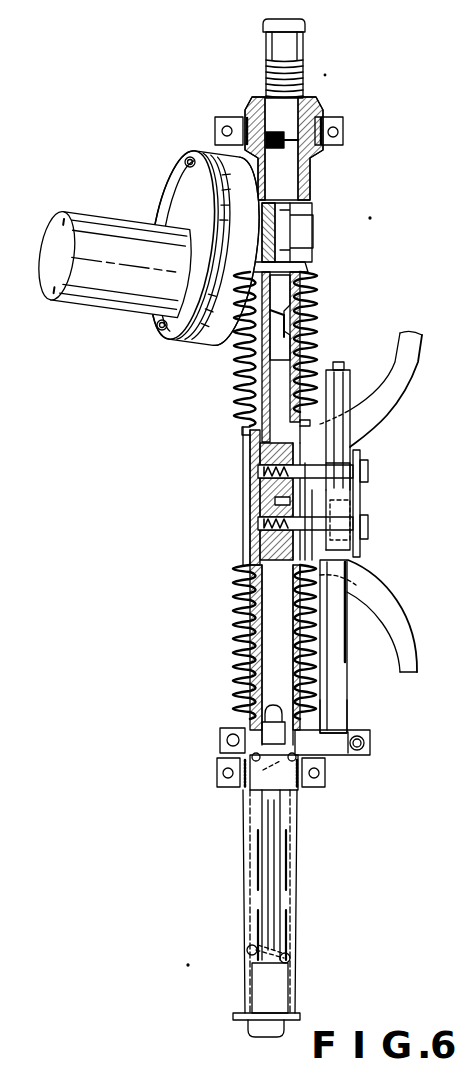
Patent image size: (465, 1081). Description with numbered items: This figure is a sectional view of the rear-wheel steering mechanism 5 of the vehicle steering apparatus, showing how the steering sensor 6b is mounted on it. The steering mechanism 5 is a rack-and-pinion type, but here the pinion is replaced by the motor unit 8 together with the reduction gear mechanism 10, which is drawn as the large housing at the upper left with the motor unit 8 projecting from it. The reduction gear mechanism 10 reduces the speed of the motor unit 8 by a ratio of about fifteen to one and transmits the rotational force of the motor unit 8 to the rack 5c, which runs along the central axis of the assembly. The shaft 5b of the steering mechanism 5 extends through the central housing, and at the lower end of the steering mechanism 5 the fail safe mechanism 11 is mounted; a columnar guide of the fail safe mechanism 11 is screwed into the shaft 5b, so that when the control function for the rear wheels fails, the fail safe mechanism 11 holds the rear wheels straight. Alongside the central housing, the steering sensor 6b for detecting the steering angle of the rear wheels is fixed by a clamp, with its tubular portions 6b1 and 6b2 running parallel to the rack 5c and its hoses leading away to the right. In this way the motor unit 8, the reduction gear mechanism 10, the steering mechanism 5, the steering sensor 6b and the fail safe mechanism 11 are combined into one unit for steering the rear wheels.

The steering mechanism 5 is at (243, 547).
The shaft 5b is at (272, 440).
The rack 5c is at (240, 363).
The steering sensor 6b is at (383, 692).
The tube wall line 6b1 is at (340, 658).
The tube lower end 6b2 is at (342, 724).
The motor unit 8 is at (114, 304).
The reduction gear mechanism 10 is at (203, 342).
The fail safe mechanism 11 is at (240, 864).